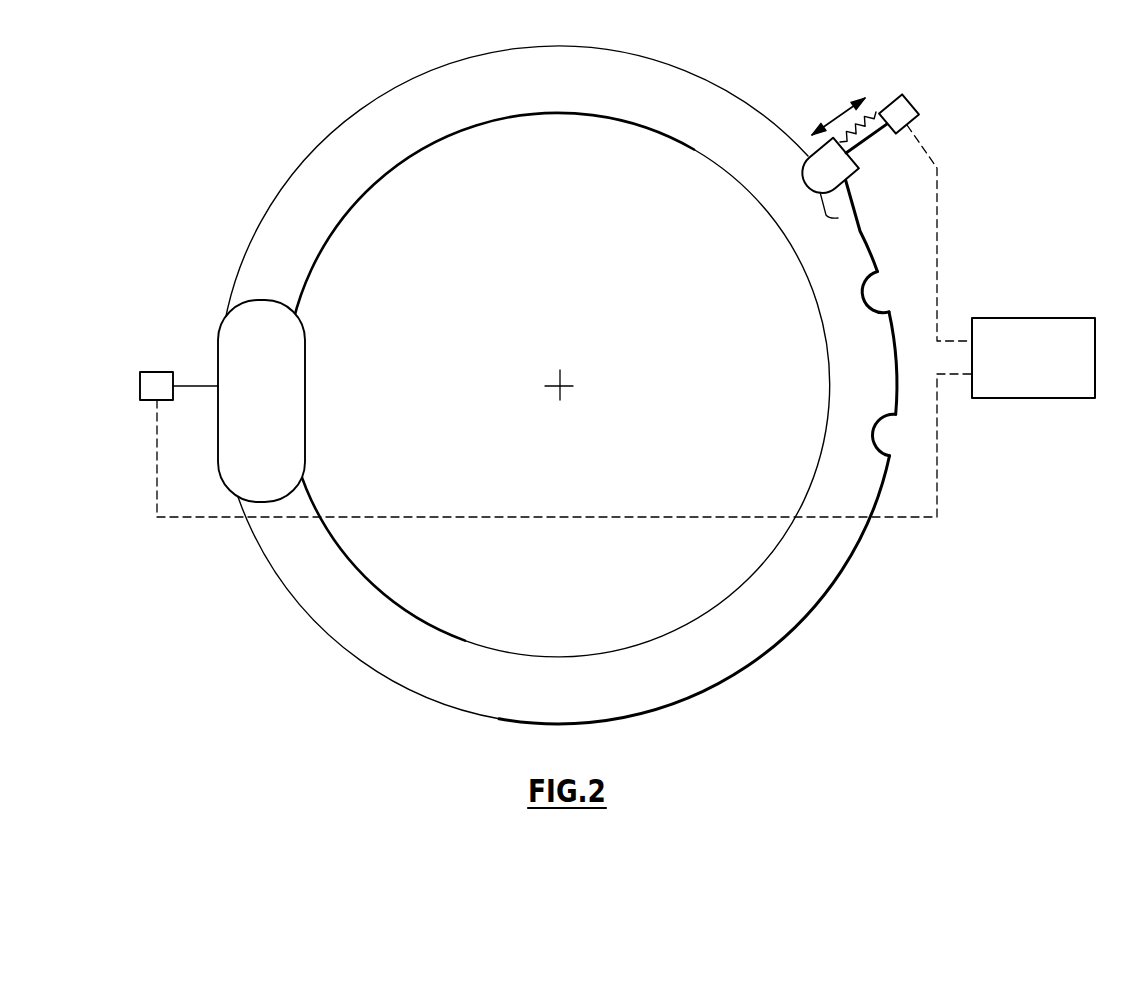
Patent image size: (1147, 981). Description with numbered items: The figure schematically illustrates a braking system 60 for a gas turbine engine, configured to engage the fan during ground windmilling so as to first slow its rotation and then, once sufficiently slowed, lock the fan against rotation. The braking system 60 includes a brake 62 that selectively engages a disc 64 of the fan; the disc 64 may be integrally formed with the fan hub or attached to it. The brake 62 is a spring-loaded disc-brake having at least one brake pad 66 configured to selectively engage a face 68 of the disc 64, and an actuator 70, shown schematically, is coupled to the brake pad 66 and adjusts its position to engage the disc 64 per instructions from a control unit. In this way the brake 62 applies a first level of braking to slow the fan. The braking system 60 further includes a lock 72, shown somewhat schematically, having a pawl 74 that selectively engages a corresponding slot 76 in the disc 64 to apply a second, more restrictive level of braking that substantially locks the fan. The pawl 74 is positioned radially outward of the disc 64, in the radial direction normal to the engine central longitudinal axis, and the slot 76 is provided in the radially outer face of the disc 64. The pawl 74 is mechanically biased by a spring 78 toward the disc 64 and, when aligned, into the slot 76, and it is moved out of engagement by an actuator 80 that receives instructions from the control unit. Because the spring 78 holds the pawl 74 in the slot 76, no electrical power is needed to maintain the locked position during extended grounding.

The braking system 60 is at (562, 377).
The brake 62 is at (322, 321).
The disc 64 is at (436, 165).
The brake pad 66 is at (290, 403).
The face 68 is at (312, 218).
The actuator 70 is at (155, 372).
The lock 72 is at (899, 162).
The pawl 74 is at (838, 168).
The slot 76 is at (838, 218).
The spring 78 is at (852, 128).
The actuator 80 is at (910, 112).